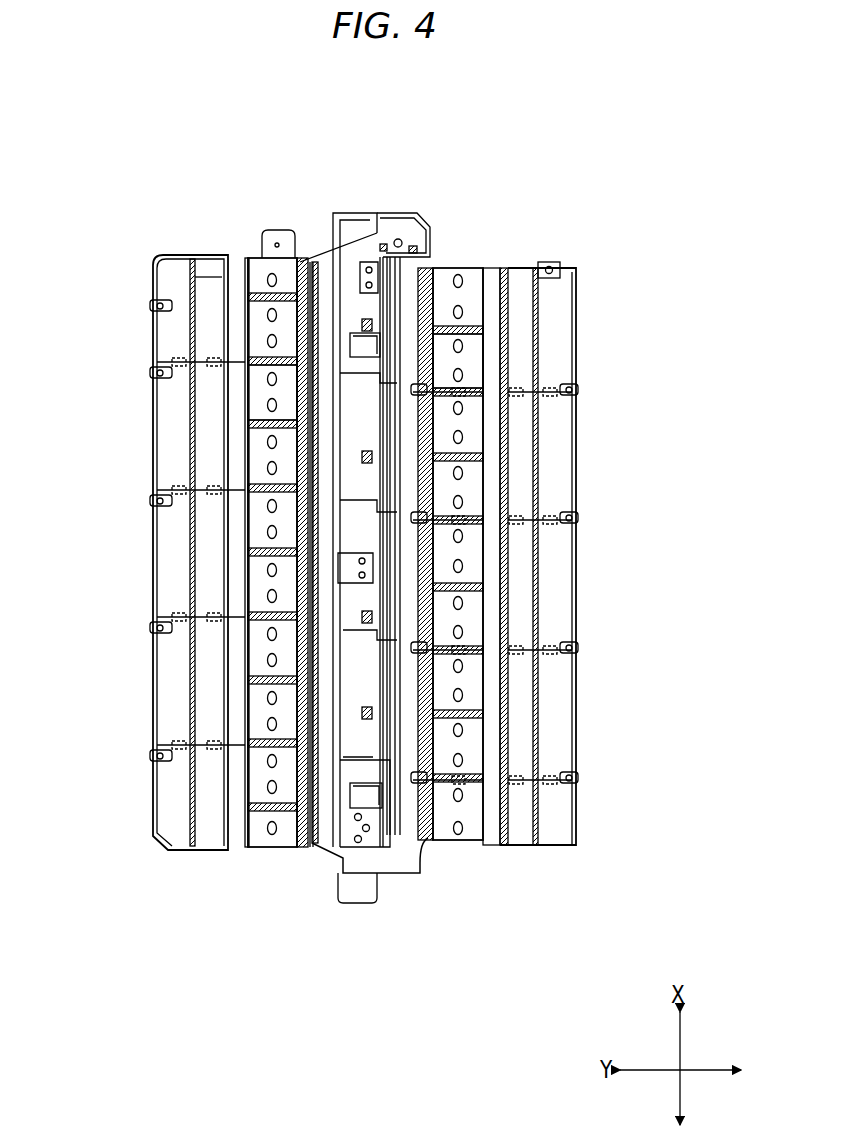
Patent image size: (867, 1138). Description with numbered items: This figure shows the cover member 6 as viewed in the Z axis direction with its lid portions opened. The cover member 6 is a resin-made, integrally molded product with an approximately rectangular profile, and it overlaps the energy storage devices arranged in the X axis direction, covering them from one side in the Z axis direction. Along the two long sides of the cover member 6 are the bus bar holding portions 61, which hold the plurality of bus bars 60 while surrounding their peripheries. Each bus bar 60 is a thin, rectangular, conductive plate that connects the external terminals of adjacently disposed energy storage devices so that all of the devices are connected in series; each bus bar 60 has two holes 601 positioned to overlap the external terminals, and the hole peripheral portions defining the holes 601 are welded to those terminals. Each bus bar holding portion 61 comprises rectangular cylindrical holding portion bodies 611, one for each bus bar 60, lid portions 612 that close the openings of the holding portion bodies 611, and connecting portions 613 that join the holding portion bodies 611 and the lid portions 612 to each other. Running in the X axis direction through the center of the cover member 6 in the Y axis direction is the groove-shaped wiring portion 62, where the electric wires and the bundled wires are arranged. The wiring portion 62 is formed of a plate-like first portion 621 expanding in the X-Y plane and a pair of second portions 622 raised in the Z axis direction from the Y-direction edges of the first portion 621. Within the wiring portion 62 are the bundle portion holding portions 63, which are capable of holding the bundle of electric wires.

The cover member 6 is at (519, 262).
The bus bar 60 is at (262, 393).
The hole 601 is at (267, 380).
The bus bar holding portion 61 is at (359, 603).
The holding portion body 611 is at (359, 586).
The lid portion 612 is at (223, 890).
The connecting portion 613 is at (247, 890).
The wiring portion 62 is at (367, 495).
The first portion 621 is at (361, 255).
The second portion 622 is at (325, 300).
The bundle portion holding portion 63 is at (367, 352).